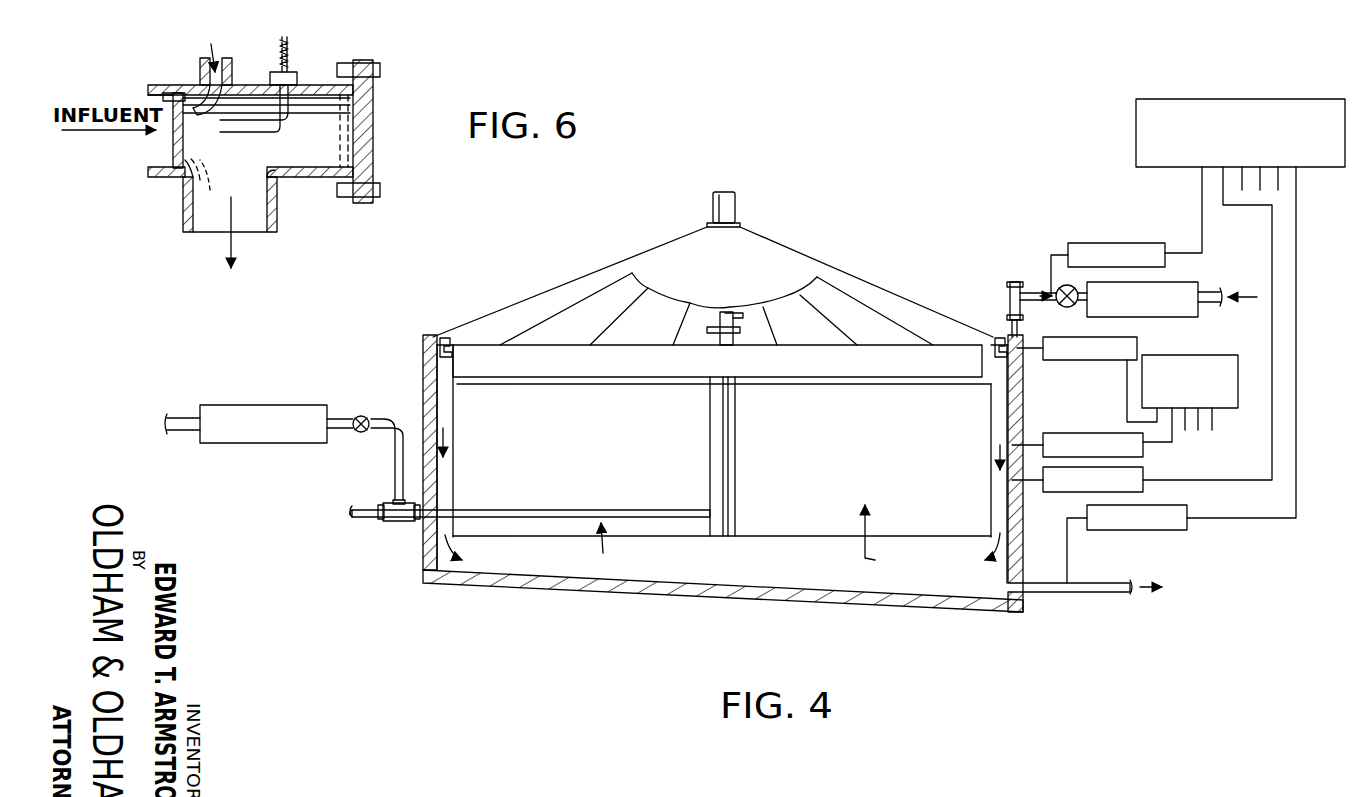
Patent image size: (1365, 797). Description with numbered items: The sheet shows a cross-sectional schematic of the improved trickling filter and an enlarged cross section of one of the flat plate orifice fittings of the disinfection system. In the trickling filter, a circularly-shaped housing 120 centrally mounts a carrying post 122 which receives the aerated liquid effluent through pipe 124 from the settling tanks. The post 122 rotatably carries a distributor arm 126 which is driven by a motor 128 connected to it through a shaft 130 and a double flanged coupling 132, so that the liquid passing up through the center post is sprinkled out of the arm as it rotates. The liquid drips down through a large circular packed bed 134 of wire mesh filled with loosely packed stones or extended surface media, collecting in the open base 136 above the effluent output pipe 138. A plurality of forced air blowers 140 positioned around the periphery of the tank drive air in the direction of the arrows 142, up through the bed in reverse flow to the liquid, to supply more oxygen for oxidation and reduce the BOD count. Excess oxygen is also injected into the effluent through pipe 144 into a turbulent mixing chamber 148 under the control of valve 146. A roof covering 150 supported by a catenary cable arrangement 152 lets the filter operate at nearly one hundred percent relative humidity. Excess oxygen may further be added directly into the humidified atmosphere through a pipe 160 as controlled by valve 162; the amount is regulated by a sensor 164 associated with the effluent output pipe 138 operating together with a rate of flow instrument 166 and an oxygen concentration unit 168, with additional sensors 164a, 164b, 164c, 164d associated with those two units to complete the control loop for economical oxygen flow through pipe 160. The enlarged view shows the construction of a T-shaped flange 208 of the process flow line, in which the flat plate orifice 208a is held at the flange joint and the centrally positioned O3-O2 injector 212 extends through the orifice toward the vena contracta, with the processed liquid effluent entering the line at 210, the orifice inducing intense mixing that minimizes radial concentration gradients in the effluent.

In FIG. 6, the T-shaped flange 208 is at (155, 85).
In FIG. 6, the flat plate orifice 208a is at (173, 87).
In FIG. 6, the O3-O2 injector 212 is at (238, 72).
In FIG. 6, the effluent entry point 210 is at (296, 72).
In FIG. 4, the housing 120 is at (430, 397).
In FIG. 4, the carrying post 122 is at (736, 445).
In FIG. 4, the pipe 124 is at (577, 493).
In FIG. 4, the distributor arm 126 is at (957, 345).
In FIG. 4, the motor 128 is at (736, 206).
In FIG. 4, the shaft 130 is at (743, 313).
In FIG. 4, the double flanged coupling 132 is at (736, 330).
In FIG. 4, the packed bed 134 is at (632, 540).
In FIG. 4, the tank floor 136 is at (698, 567).
In FIG. 4, the effluent output pipe 138 is at (1110, 593).
In FIG. 4, the forced air blower 140 is at (433, 335).
In FIG. 4, the arrows 142 is at (450, 438).
In FIG. 4, the pipe 144 is at (395, 468).
In FIG. 4, the valve 146 is at (359, 416).
In FIG. 4, the turbulent mixing chamber 148 is at (400, 521).
In FIG. 4, the roof covering 150 is at (772, 268).
In FIG. 4, the catenary cable arrangement 152 is at (858, 280).
In FIG. 4, the pipe 160 is at (1038, 287).
In FIG. 4, the valve 162 is at (1046, 326).
In FIG. 4, the sensor 164 is at (1127, 544).
In FIG. 4, the sensor 164a is at (1143, 470).
In FIG. 4, the sensor 164b is at (1100, 433).
In FIG. 4, the sensor 164c is at (1125, 337).
In FIG. 4, the sensor 164d is at (1160, 243).
In FIG. 4, the rate of flow instrument 166 is at (1190, 355).
In FIG. 4, the oxygen concentration unit 168 is at (1240, 99).